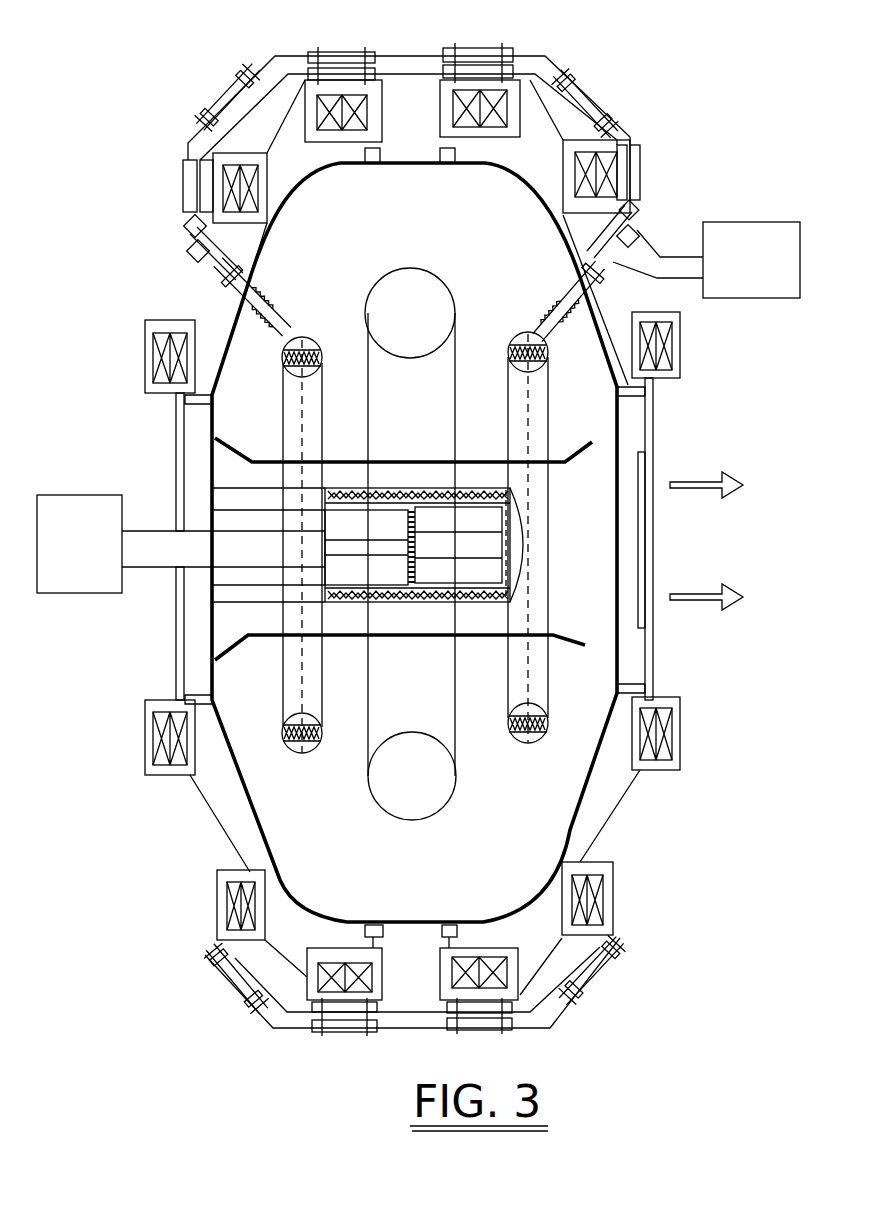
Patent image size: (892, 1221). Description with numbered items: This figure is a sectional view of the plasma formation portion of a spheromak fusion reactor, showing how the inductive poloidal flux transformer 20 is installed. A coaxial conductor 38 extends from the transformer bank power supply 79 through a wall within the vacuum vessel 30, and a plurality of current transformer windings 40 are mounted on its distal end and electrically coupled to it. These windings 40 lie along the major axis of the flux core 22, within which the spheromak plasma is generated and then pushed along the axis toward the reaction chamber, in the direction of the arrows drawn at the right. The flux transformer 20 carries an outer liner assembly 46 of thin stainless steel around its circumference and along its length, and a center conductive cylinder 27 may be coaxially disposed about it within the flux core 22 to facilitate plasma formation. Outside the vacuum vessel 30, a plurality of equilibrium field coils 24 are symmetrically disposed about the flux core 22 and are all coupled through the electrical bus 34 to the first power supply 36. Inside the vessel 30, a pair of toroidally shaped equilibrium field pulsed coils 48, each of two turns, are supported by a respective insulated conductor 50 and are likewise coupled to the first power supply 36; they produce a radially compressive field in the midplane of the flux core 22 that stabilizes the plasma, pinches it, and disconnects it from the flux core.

The inductive poloidal flux transformer 20 is at (348, 690).
The flux core 22 is at (458, 785).
The equilibrium field coils 24 is at (455, 108).
The center conductive cylinder 27 is at (352, 460).
The vacuum vessel 30 is at (210, 316).
The electrical bus 34 is at (670, 257).
The first power supply 36 is at (750, 302).
The coaxial conductor 38 is at (157, 570).
The current transformer windings 40 is at (360, 602).
The outer liner assembly 46 is at (520, 573).
The equilibrium field pulsed coils 48 is at (518, 343).
The insulated conductor 50 is at (292, 292).
The transformer bank power supply 79 is at (92, 545).